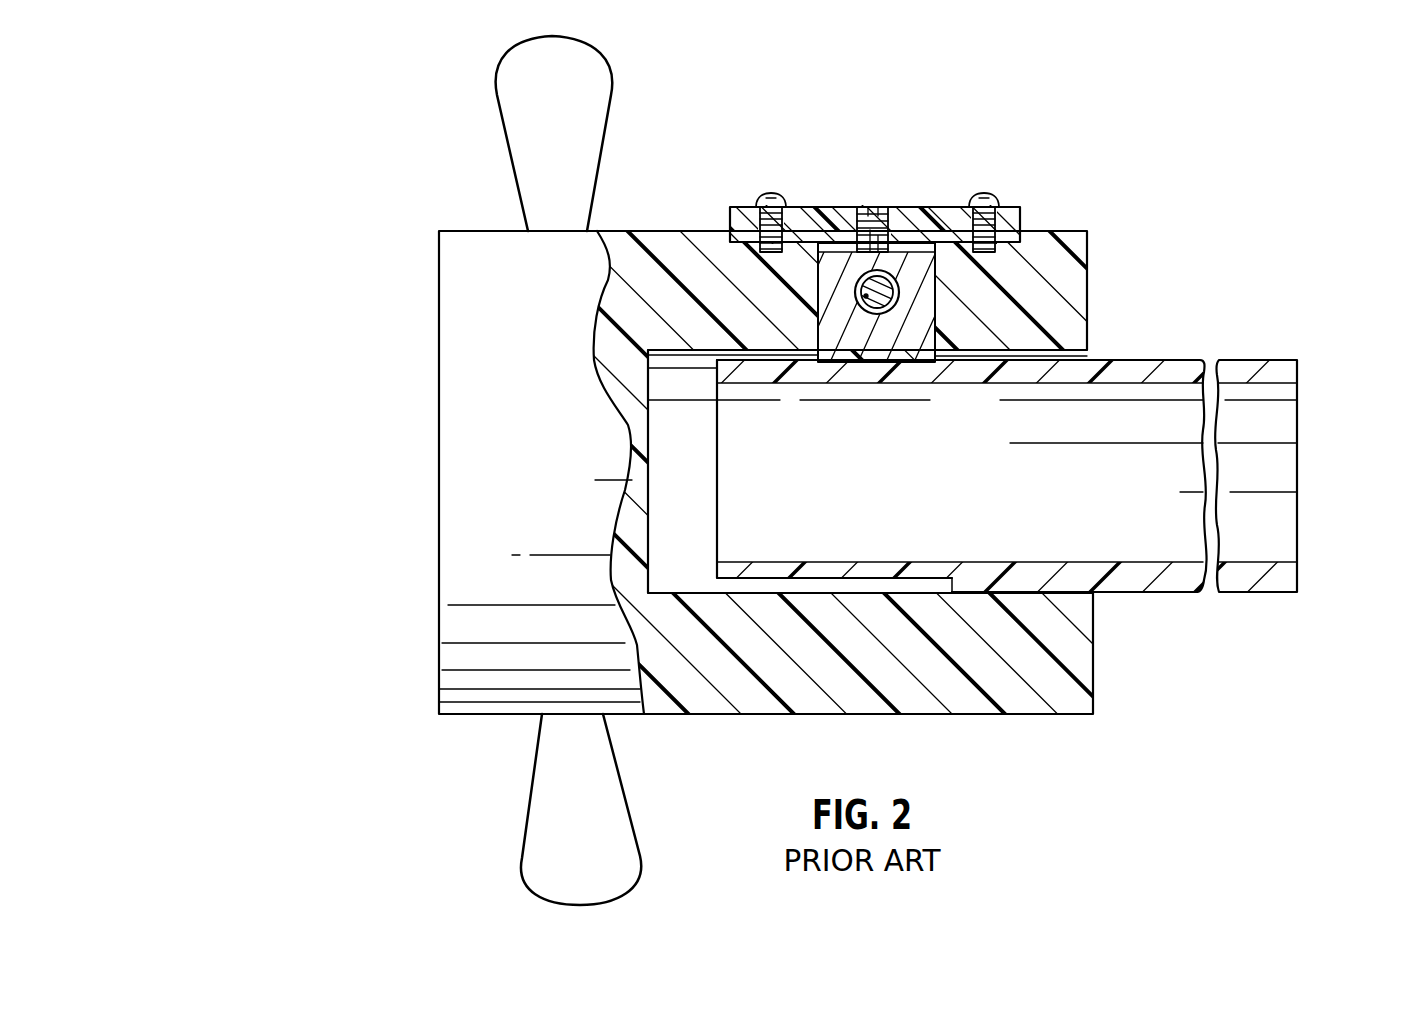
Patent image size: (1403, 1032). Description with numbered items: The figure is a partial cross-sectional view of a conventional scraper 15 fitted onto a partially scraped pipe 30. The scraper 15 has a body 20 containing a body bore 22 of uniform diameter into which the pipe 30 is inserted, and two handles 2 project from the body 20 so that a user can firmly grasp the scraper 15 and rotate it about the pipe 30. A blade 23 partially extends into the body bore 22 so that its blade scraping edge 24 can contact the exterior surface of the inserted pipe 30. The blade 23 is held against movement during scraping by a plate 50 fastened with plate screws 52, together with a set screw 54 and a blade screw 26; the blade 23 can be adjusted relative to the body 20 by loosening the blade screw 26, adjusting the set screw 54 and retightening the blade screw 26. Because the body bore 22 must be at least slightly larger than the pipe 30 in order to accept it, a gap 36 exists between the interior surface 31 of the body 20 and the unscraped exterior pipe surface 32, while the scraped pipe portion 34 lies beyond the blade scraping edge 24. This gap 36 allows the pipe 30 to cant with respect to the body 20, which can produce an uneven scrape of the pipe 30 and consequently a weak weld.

The scraper 15 is at (330, 283).
The handles 2 is at (640, 856).
The body 20 is at (1090, 700).
The body bore 22 is at (660, 487).
The blade 23 is at (935, 262).
The blade scraping edge 24 is at (872, 362).
The blade screw 26 is at (866, 296).
The pipe 30 is at (1297, 366).
The interior surface 31 is at (693, 352).
The unscraped exterior pipe surface 32 is at (1131, 595).
The scraped pipe portion 34 is at (747, 578).
The gap 36 is at (1080, 353).
The plate 50 is at (1018, 213).
The plate screws 52 is at (762, 250).
The set screw 54 is at (862, 222).